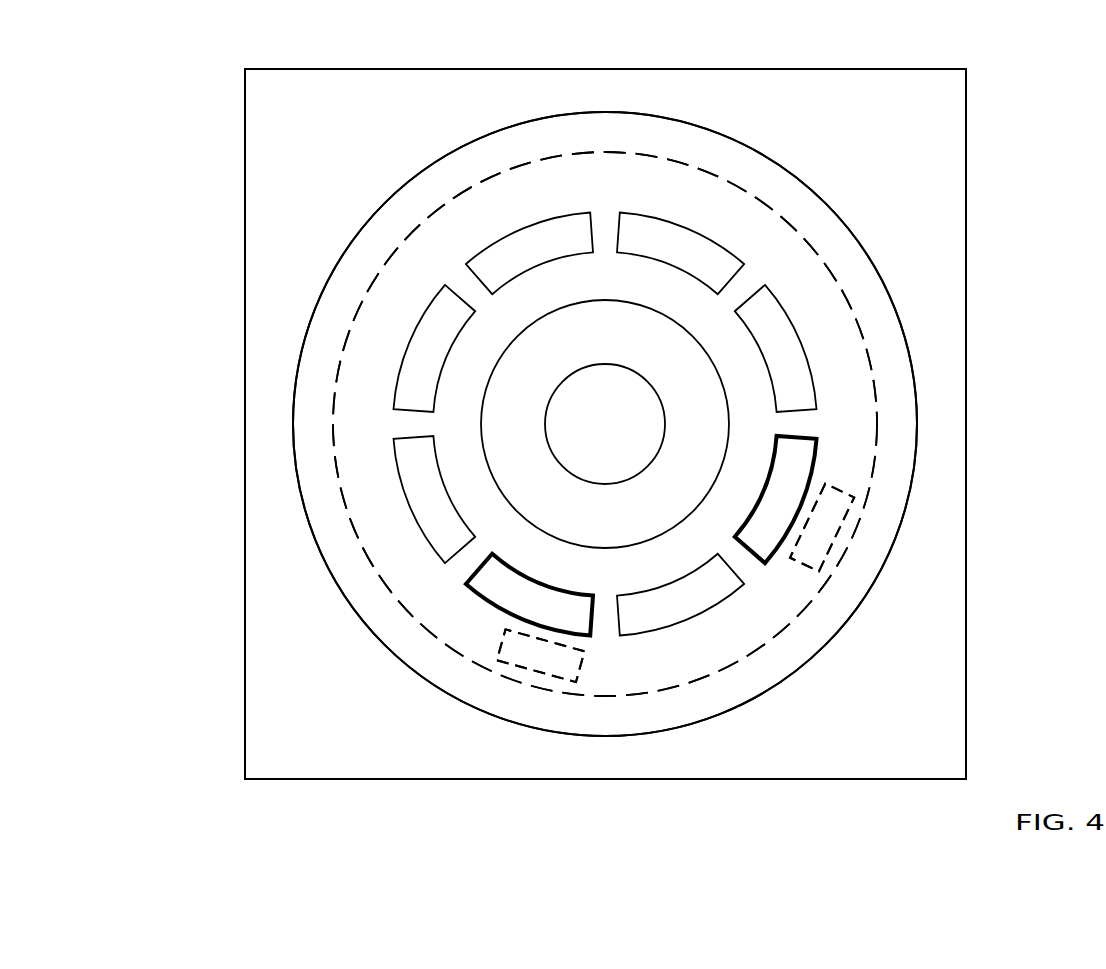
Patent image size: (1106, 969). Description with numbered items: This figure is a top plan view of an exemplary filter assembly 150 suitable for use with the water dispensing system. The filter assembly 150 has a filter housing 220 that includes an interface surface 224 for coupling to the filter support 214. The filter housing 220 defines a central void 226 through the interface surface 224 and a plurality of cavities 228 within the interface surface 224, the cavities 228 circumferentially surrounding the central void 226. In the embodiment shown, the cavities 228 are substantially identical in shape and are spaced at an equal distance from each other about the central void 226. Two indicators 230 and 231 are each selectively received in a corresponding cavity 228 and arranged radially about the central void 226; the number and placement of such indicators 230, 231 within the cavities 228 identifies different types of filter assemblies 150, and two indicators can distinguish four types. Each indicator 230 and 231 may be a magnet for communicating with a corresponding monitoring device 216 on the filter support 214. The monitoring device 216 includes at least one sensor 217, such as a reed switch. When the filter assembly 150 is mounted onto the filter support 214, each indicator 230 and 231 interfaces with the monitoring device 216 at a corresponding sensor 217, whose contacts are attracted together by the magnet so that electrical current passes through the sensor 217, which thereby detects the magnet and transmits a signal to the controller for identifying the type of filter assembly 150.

The filter assembly 150 is at (889, 296).
The filter housing 220 is at (668, 135).
The interface surface 224 is at (838, 232).
The filter support 214 is at (873, 365).
The central void 226 is at (590, 382).
The cavities 228 is at (410, 376).
The indicator 230 is at (535, 590).
The indicator 231 is at (803, 452).
The monitoring device 216 is at (836, 518).
The sensor 217 is at (815, 553).